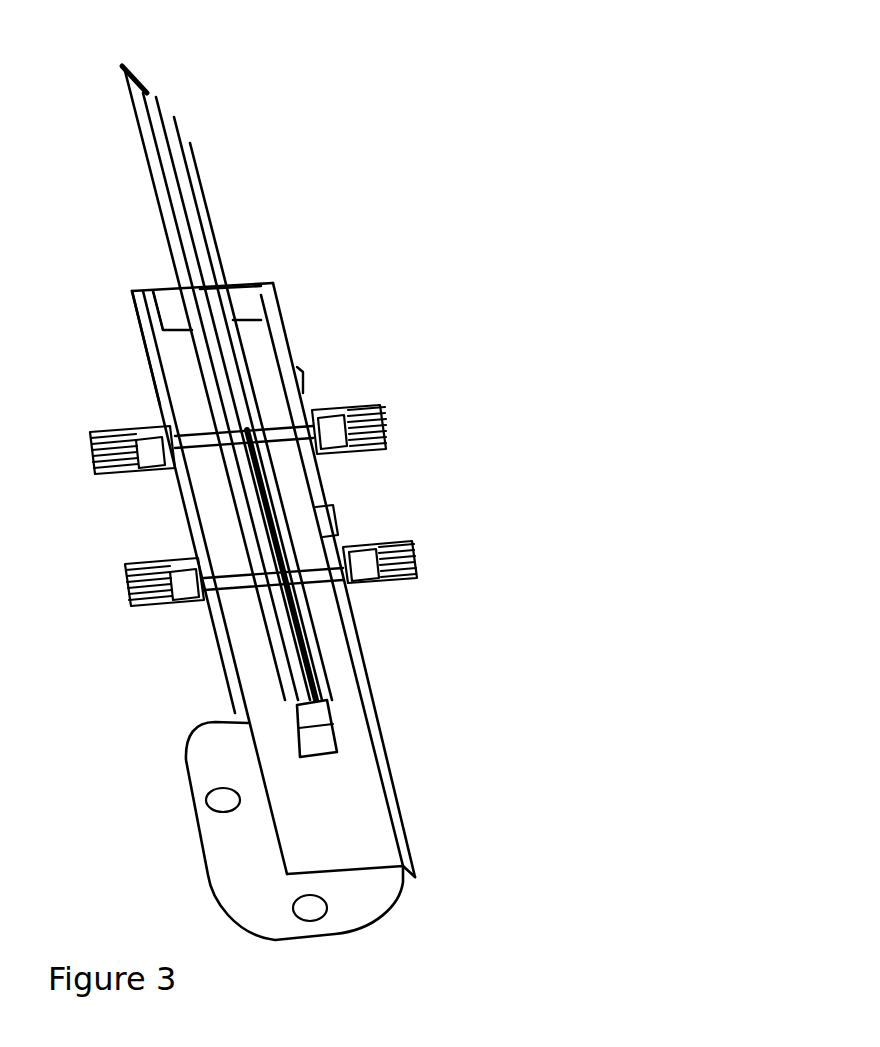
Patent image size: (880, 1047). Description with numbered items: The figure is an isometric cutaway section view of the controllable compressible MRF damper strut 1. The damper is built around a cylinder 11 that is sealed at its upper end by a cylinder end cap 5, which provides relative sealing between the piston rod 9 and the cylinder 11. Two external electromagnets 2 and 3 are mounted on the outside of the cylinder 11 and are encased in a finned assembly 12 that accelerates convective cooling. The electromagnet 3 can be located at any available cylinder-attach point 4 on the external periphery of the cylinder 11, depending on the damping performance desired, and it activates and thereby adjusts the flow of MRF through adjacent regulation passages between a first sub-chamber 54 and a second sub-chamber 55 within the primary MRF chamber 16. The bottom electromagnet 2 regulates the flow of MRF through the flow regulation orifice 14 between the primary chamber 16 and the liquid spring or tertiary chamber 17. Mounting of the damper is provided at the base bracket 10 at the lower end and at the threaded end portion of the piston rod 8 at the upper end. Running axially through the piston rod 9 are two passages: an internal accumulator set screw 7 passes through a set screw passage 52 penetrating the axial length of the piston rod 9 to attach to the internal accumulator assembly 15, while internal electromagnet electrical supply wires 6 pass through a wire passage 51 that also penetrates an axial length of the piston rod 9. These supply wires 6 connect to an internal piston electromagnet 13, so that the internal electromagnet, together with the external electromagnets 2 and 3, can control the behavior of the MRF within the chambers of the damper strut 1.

The MRF damper strut 1 is at (483, 125).
The bottom electromagnet 2 is at (412, 557).
The electromagnet 3 is at (388, 432).
The cylinder-attach point 4 is at (152, 425).
The cylinder end cap 5 is at (167, 280).
The internal electromagnet electrical supply wires 6 is at (127, 73).
The internal accumulator set screw 7 is at (157, 97).
The threaded end portion of the piston rod 8 is at (173, 117).
The piston rod 9 is at (200, 187).
The base bracket 10 is at (330, 910).
The cylinder 11 is at (372, 670).
The finned assembly 12 is at (145, 562).
The internal piston electromagnet 13 is at (323, 473).
The flow regulation orifice 14 is at (215, 605).
The internal accumulator assembly 15 is at (285, 715).
The primary MRF chamber 16 is at (268, 365).
The tertiary chamber 17 is at (340, 798).
The wire passage 51 is at (147, 160).
The set screw passage 52 is at (210, 243).
The first sub-chamber 54 is at (237, 340).
The second sub-chamber 55 is at (285, 536).